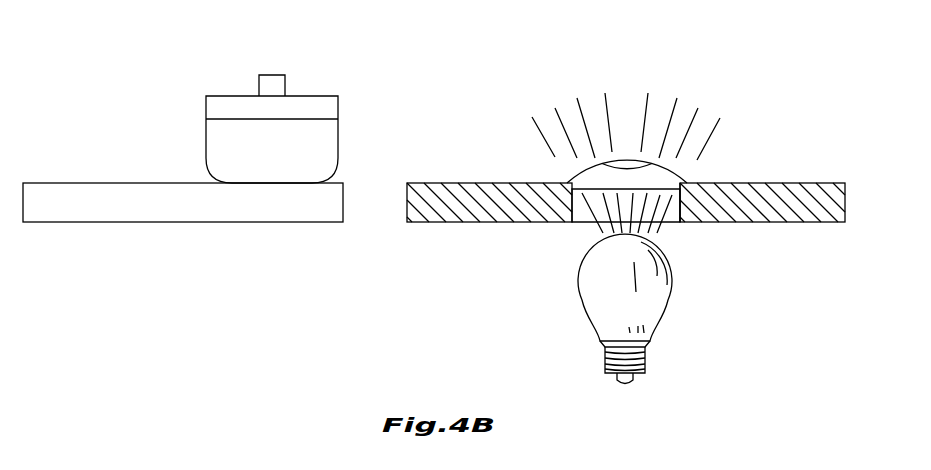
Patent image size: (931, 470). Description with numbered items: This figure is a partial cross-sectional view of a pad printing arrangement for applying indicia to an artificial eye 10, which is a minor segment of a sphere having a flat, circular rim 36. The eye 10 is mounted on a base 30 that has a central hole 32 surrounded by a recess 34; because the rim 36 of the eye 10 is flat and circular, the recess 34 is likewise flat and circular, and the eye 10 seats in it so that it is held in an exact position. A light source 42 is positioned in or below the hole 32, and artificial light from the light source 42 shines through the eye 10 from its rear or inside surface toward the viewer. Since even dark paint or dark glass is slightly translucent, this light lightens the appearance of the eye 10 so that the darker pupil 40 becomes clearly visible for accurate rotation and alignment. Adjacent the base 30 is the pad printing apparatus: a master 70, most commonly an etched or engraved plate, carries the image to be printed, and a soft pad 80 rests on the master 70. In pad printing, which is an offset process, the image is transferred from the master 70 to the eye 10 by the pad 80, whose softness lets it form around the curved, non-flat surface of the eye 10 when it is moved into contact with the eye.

The eye 10 is at (585, 180).
The base 30 is at (763, 183).
The central hole 32 is at (602, 208).
The recess 34 is at (687, 186).
The rim 36 is at (567, 185).
The pupil 40 is at (626, 162).
The light source 42 is at (647, 300).
The master 70 is at (165, 183).
The pad 80 is at (313, 142).